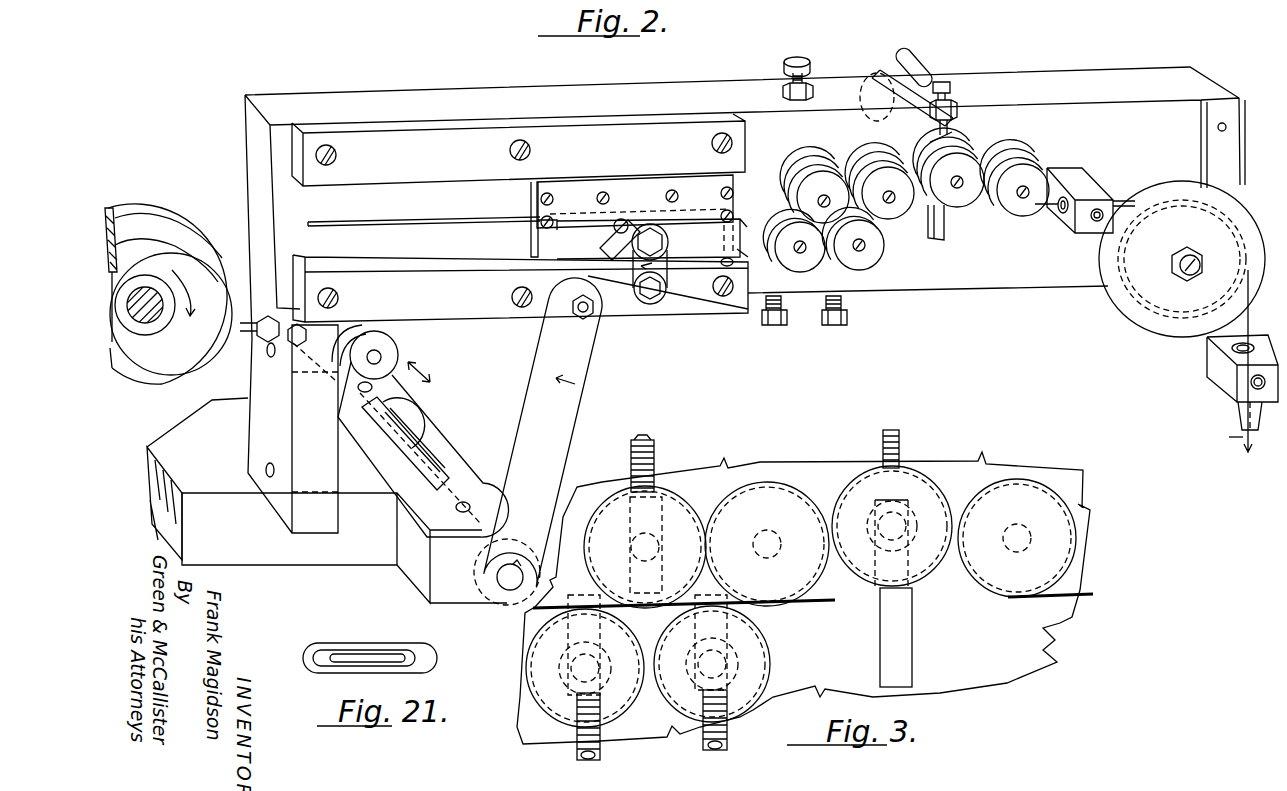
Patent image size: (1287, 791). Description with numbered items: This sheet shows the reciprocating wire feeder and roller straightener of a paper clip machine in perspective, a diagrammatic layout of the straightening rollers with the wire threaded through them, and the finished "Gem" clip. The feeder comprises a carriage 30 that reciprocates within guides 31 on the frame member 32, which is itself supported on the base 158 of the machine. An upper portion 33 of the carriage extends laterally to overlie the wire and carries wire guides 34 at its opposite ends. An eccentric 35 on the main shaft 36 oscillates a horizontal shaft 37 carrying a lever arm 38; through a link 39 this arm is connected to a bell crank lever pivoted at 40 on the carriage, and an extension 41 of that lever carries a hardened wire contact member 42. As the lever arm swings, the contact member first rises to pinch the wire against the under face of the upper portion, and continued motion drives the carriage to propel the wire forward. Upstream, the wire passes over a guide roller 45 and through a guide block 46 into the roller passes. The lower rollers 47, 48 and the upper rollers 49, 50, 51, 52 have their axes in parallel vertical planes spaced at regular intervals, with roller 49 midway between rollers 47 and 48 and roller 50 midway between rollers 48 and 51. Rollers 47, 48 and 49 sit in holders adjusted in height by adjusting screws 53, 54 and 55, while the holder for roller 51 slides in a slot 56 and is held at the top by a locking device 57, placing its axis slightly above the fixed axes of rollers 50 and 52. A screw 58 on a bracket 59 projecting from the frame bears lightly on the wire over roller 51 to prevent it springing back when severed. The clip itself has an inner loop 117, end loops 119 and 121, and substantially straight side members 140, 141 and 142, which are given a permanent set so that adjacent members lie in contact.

In FIG. 2, the carriage 30 is at (528, 199).
In FIG. 2, the guides 31 is at (311, 257).
In FIG. 2, the frame member 32 is at (423, 93).
In FIG. 2, the upper portion 33 is at (586, 206).
In FIG. 2, the wire guides 34 is at (545, 230).
In FIG. 2, the eccentric 35 is at (165, 362).
In FIG. 2, the main shaft 36 is at (146, 294).
In FIG. 2, the horizontal shaft 37 is at (430, 467).
In FIG. 2, the lever arm 38 is at (572, 403).
In FIG. 2, the link 39 is at (620, 296).
In FIG. 2, the pivot 40 is at (656, 246).
In FIG. 2, the extension 41 is at (606, 245).
In FIG. 2, the wire contact member 42 is at (628, 220).
In FIG. 2, the guide roller 45 is at (1250, 228).
In FIG. 2, the guide block 46 is at (1067, 228).
In FIG. 2, the lower roller 47 is at (810, 270).
In FIG. 3, the lower roller 47 is at (558, 677).
In FIG. 2, the lower roller 48 is at (869, 268).
In FIG. 3, the lower roller 48 is at (687, 676).
In FIG. 2, the upper roller 49 is at (830, 195).
In FIG. 3, the upper roller 49 is at (618, 556).
In FIG. 2, the upper roller 50 is at (896, 191).
In FIG. 3, the upper roller 50 is at (780, 584).
In FIG. 2, the upper roller 51 is at (965, 155).
In FIG. 3, the upper roller 51 is at (942, 537).
In FIG. 2, the upper roller 52 is at (1018, 160).
In FIG. 3, the upper roller 52 is at (1017, 582).
In FIG. 2, the adjusting screw 53 is at (778, 326).
In FIG. 3, the adjusting screw 53 is at (602, 750).
In FIG. 2, the adjusting screw 54 is at (840, 326).
In FIG. 3, the adjusting screw 54 is at (728, 745).
In FIG. 2, the adjusting screw 55 is at (800, 58).
In FIG. 3, the adjusting screw 55 is at (656, 455).
In FIG. 2, the slot 56 is at (942, 222).
In FIG. 3, the slot 56 is at (908, 640).
In FIG. 2, the locking device 57 is at (925, 100).
In FIG. 2, the screw 58 is at (953, 97).
In FIG. 3, the screw 58 is at (902, 444).
In FIG. 2, the bracket 59 is at (952, 132).
In FIG. 2, the base 158 is at (240, 536).
In FIG. 21, the inner loop 117 is at (404, 652).
In FIG. 21, the end loop 119 is at (305, 664).
In FIG. 21, the end loop 121 is at (437, 657).
In FIG. 21, the side member 140 is at (361, 642).
In FIG. 21, the side member 141 is at (322, 674).
In FIG. 21, the side member 142 is at (393, 674).